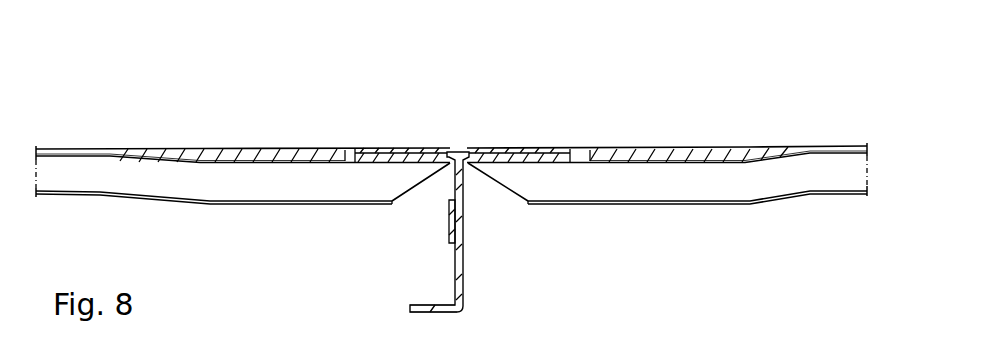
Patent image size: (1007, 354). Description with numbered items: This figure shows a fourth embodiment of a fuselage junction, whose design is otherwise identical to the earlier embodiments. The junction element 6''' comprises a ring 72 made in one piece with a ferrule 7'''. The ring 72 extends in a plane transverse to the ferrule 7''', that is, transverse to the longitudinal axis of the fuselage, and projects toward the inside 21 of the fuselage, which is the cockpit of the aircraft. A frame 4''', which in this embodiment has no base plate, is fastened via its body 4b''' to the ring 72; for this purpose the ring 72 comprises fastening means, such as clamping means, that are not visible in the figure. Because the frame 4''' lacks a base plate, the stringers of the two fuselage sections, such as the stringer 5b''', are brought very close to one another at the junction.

The stringer 5b''' is at (697, 218).
The junction element 6''' is at (462, 164).
The ferrule 7''' is at (462, 132).
The frame 4''' is at (459, 232).
The body 4b''' is at (424, 284).
The ring 72 is at (463, 210).
The inside of the fuselage 21 is at (687, 242).